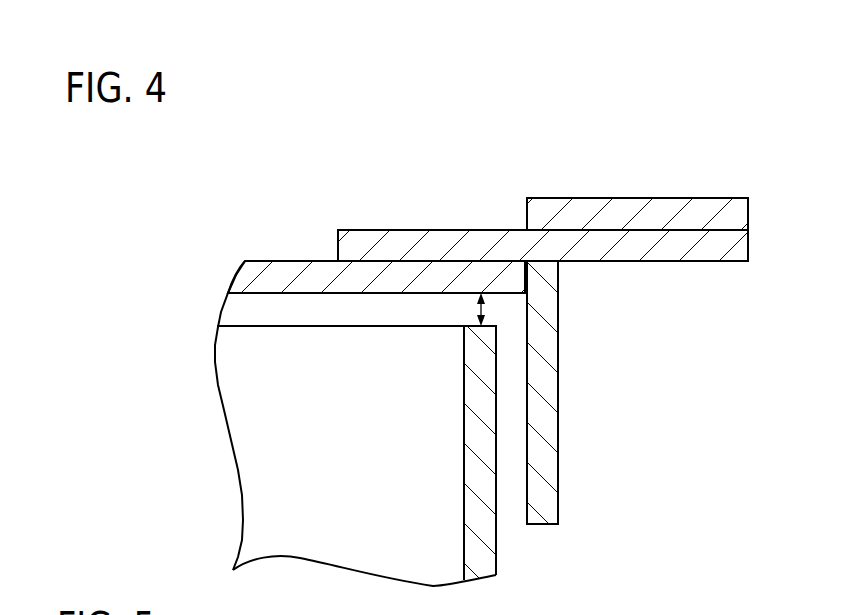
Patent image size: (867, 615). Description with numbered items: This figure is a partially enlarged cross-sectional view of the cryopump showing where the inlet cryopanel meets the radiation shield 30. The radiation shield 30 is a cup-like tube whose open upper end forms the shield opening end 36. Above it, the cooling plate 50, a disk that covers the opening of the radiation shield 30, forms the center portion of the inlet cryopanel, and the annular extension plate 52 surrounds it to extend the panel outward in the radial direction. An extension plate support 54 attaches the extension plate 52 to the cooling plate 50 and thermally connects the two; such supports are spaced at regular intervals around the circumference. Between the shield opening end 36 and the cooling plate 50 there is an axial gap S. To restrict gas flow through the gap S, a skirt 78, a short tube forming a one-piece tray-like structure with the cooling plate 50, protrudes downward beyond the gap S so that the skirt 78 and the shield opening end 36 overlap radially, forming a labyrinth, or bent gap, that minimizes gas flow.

The radiation shield 30 is at (482, 563).
The shield opening end 36 is at (475, 380).
The cooling plate 50 is at (292, 268).
The extension plate 52 is at (628, 208).
The extension plate support 54 is at (508, 240).
The skirt 78 is at (545, 432).
The gap S is at (478, 306).